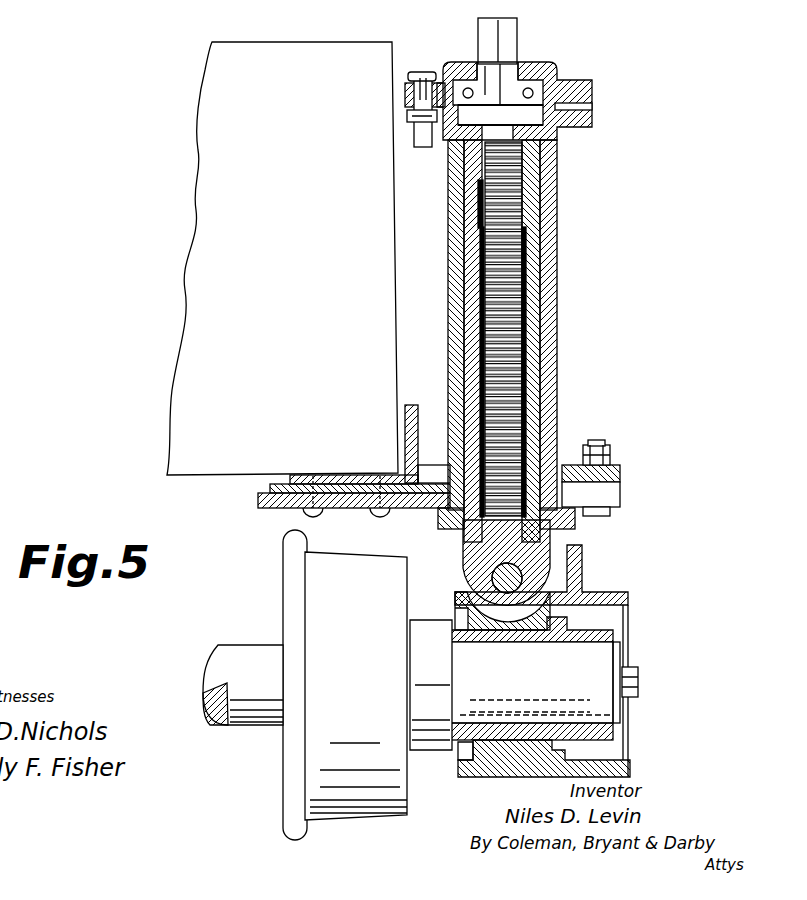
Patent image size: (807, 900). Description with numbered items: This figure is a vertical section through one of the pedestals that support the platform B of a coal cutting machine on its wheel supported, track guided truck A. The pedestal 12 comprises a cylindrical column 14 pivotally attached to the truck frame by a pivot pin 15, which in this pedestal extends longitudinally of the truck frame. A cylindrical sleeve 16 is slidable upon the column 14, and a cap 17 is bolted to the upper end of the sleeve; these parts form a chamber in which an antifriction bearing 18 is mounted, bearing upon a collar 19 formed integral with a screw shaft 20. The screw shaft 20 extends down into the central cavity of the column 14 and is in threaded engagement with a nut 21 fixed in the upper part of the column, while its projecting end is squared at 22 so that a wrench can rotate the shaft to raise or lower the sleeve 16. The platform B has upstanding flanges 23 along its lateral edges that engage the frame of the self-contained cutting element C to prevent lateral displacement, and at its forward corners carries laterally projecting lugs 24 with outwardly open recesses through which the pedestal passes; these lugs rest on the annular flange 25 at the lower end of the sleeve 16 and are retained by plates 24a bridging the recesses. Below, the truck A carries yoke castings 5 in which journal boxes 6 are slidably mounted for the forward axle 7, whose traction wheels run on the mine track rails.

The yoke casting 5 is at (628, 593).
The journal box 6 is at (590, 628).
The forward axle 7 is at (228, 647).
The pedestal 12 is at (558, 321).
The cylindrical column 14 is at (532, 380).
The pivot pin 15 is at (500, 584).
The cylindrical sleeve 16 is at (558, 206).
The cap 17 is at (588, 80).
The antifriction bearing 18 is at (468, 88).
The collar 19 is at (593, 107).
The screw shaft 20 is at (480, 278).
The nut 21 is at (480, 202).
The squared end 22 is at (507, 32).
The upstanding flange 23 is at (411, 405).
The laterally projecting lug 24 is at (605, 494).
The plate 24a is at (620, 473).
The annular flange 25 is at (577, 525).
The truck A is at (582, 568).
The platform B is at (258, 506).
The coal cutting element C is at (218, 233).